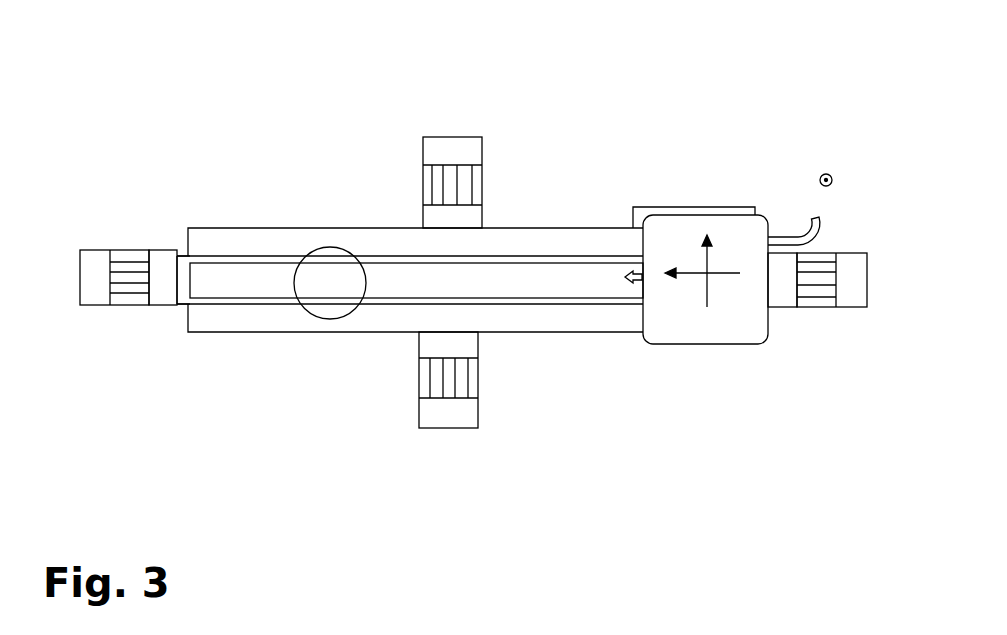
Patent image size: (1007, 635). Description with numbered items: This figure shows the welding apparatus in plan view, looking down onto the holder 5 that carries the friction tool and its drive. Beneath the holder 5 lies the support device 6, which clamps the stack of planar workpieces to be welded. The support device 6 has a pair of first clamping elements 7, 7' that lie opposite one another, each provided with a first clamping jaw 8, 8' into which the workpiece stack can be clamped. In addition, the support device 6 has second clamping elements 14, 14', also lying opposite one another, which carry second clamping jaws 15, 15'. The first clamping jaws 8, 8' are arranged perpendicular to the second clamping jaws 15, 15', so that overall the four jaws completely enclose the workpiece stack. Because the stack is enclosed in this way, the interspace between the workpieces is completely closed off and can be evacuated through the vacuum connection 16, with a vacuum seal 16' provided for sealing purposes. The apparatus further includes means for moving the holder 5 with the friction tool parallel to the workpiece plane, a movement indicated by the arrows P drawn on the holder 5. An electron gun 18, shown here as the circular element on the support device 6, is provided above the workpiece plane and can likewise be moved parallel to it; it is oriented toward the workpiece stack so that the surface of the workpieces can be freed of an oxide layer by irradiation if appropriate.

The holder 5 is at (685, 325).
The support device 6 is at (163, 391).
The first clamping element 7 is at (121, 173).
The first clamping element 7' is at (836, 386).
The first clamping jaw 8 is at (186, 173).
The first clamping jaw 8' is at (784, 386).
The second clamping element 14 is at (470, 136).
The second clamping element 14' is at (430, 425).
The second clamping jaw 15 is at (410, 150).
The second clamping jaw 15' is at (410, 411).
The vacuum connection 16 is at (788, 144).
The vacuum seal 16' is at (119, 329).
The electron gun 18 is at (327, 263).
The arrows P is at (705, 270).